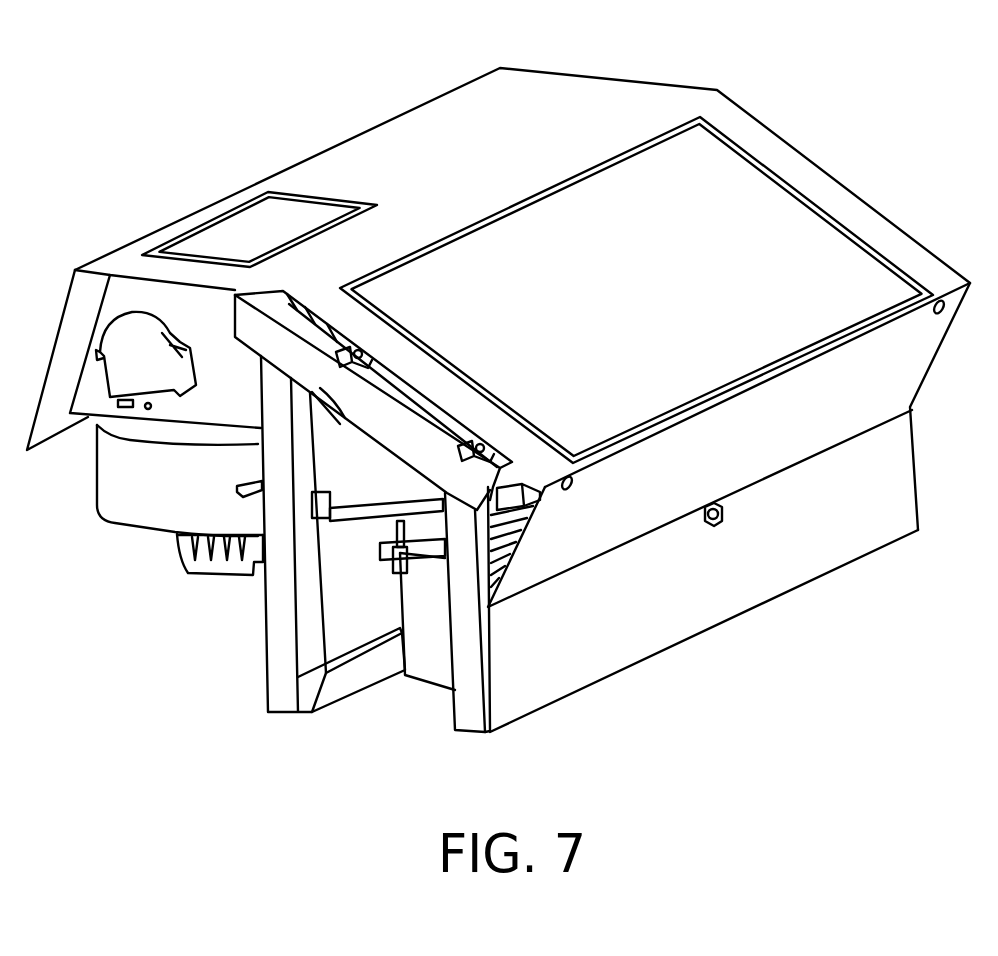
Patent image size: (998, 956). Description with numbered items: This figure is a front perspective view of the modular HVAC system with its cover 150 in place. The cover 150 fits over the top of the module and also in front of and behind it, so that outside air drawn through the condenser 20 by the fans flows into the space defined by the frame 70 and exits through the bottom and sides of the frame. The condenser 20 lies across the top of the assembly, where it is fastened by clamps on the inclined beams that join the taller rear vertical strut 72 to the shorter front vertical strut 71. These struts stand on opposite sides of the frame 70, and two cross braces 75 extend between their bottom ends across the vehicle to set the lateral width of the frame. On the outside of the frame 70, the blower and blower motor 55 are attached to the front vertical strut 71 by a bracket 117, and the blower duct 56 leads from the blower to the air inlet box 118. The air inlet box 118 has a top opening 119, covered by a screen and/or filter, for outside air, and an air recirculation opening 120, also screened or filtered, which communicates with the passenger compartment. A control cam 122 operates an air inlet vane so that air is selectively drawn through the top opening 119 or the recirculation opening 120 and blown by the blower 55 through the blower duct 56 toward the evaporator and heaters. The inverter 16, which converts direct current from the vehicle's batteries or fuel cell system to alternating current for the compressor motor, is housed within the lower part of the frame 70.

The cover 150 is at (569, 110).
The condenser 20 is at (665, 303).
The top opening 119 is at (207, 228).
The air recirculation opening 120 is at (270, 251).
The air inlet box 118 is at (240, 392).
The control cam 122 is at (132, 338).
The blower duct 56 is at (133, 503).
The blower motor 55 is at (223, 577).
The frame 70 is at (266, 672).
The rear vertical strut 72 is at (307, 612).
The front vertical strut 71 is at (473, 665).
The cross brace 75 is at (373, 690).
The inverter 16 is at (445, 632).
The bracket 117 is at (340, 500).